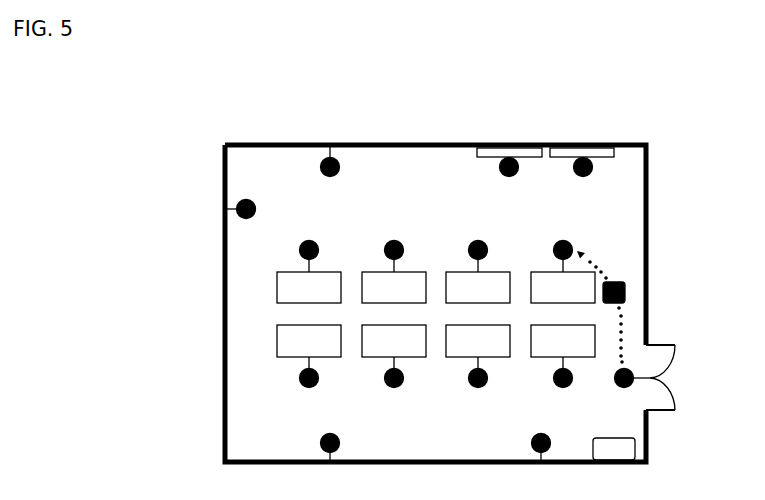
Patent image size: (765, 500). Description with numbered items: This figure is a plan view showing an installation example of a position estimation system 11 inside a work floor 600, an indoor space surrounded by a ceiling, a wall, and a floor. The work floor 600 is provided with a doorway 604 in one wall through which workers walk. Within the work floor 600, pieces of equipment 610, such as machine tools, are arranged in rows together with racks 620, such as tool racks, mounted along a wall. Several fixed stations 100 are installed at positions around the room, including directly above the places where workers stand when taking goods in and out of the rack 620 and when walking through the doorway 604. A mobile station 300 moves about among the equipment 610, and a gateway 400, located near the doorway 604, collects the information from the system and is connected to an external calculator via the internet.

The position estimation system 11 is at (562, 112).
The work floor 600 is at (376, 170).
The rack 620 is at (614, 151).
The fixed station 100 is at (565, 242).
The equipment 610 is at (601, 269).
The mobile station 300 is at (625, 284).
The doorway 604 is at (656, 358).
The gateway 400 is at (638, 440).